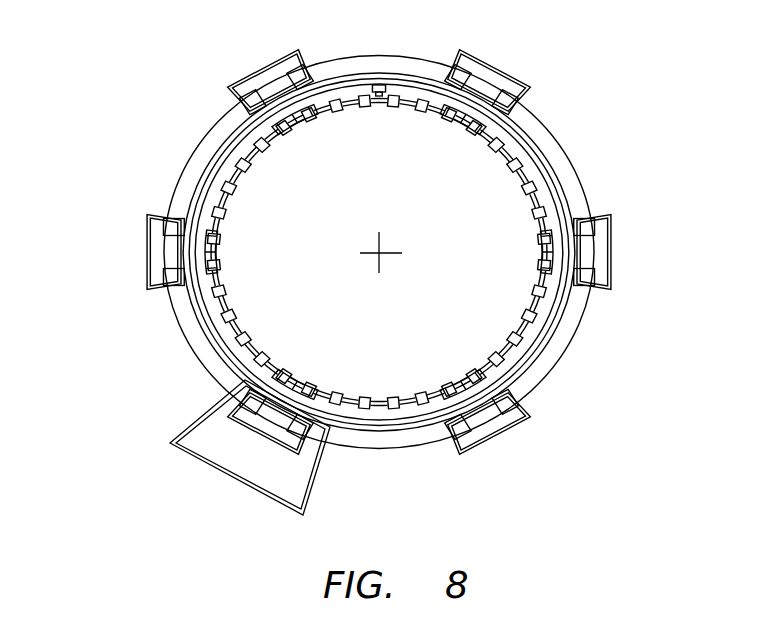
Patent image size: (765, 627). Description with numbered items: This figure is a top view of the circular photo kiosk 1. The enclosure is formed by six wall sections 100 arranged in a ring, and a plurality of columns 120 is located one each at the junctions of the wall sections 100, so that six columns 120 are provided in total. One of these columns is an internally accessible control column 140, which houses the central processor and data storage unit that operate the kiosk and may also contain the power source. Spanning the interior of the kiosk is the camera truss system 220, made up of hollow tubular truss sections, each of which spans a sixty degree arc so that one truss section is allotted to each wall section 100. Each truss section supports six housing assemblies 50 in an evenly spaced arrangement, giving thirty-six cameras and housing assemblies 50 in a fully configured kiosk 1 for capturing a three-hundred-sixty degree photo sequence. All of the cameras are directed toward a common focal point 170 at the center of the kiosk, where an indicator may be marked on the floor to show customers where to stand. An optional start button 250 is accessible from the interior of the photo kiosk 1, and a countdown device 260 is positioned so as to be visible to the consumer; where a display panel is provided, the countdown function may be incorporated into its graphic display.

The photo kiosk 1 is at (101, 78).
The housing assemblies 50 is at (253, 337).
The wall sections 100 is at (568, 343).
The columns 120 is at (613, 253).
The control column 140 is at (227, 473).
The common focal point 170 is at (376, 252).
The camera truss system 220 is at (514, 145).
The start button 250 is at (387, 82).
The countdown device 260 is at (379, 87).